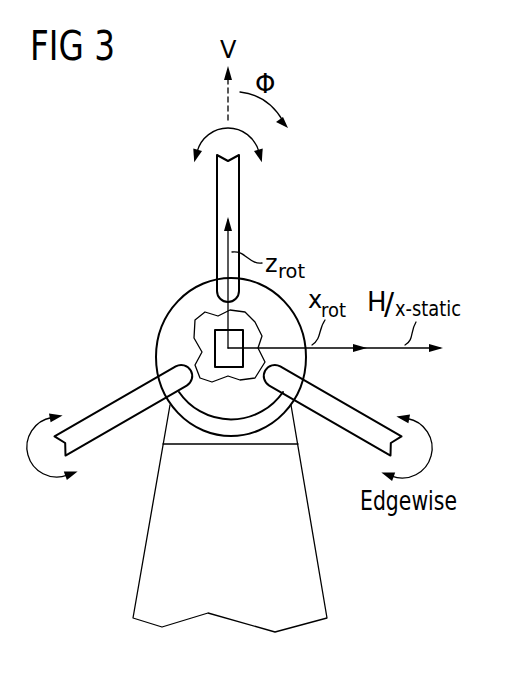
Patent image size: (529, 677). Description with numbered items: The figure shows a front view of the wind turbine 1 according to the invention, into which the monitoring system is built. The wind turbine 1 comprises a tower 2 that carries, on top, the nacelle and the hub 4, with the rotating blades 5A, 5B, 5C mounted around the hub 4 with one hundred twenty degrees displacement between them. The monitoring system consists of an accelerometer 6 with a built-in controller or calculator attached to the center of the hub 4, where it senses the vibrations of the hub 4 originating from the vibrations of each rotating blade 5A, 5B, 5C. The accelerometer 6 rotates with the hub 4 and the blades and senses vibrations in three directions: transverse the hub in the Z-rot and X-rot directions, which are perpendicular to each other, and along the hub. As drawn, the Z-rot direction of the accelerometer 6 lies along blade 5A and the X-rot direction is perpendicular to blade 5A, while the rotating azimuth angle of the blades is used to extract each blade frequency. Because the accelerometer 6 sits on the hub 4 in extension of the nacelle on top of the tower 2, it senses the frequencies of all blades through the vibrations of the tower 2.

The wind turbine 1 is at (150, 170).
The tower 2 is at (150, 552).
The hub 4 is at (182, 311).
The rotating blade 5A is at (225, 207).
The rotating blade 5B is at (108, 420).
The rotating blade 5C is at (352, 413).
The accelerometer 6 is at (221, 358).